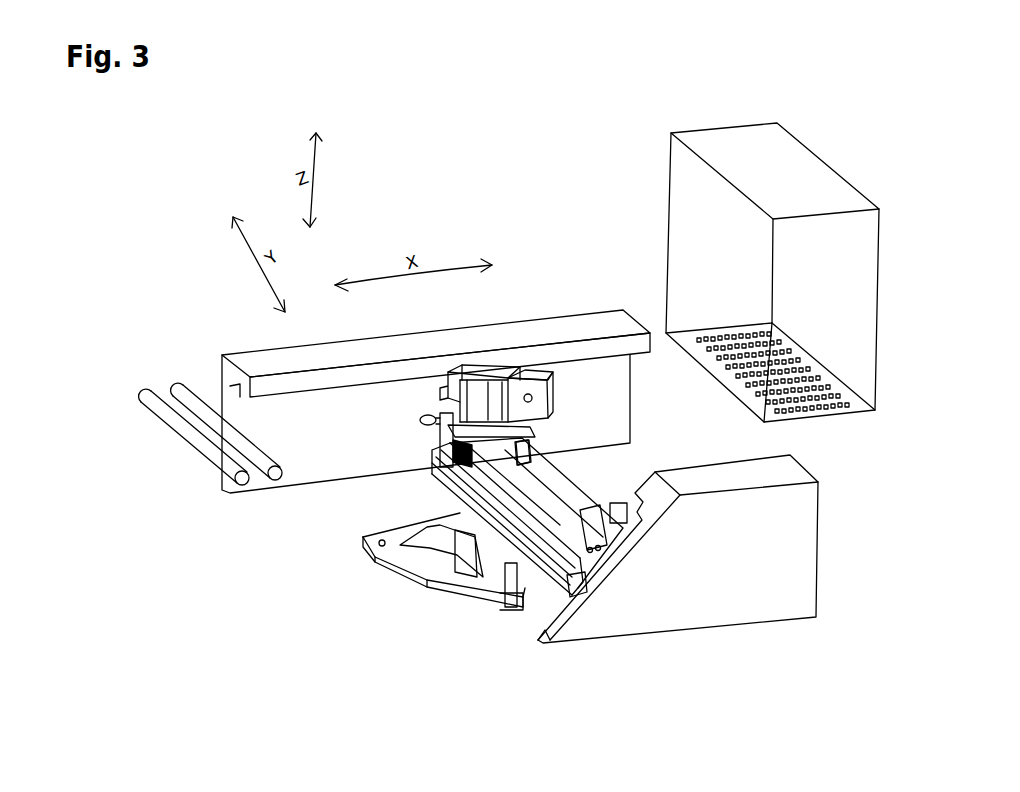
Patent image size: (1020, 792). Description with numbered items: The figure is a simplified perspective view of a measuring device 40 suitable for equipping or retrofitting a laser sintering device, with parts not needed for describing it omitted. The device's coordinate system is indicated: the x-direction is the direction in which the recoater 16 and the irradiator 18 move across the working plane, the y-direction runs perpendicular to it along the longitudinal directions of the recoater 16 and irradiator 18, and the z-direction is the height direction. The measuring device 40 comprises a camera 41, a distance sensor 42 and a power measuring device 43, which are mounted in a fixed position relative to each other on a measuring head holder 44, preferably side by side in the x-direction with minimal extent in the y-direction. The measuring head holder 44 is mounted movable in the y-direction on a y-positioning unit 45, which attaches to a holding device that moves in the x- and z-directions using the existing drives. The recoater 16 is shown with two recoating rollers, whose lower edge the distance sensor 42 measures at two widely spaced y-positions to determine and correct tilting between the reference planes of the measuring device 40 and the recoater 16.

The recoater 16 is at (202, 442).
The irradiator 18 is at (683, 198).
The measuring device 40 is at (400, 487).
The camera 41 is at (478, 372).
The distance sensor 42 is at (425, 422).
The power measuring device 43 is at (543, 397).
The measuring head holder 44 is at (532, 453).
The y-positioning unit 45 is at (522, 505).